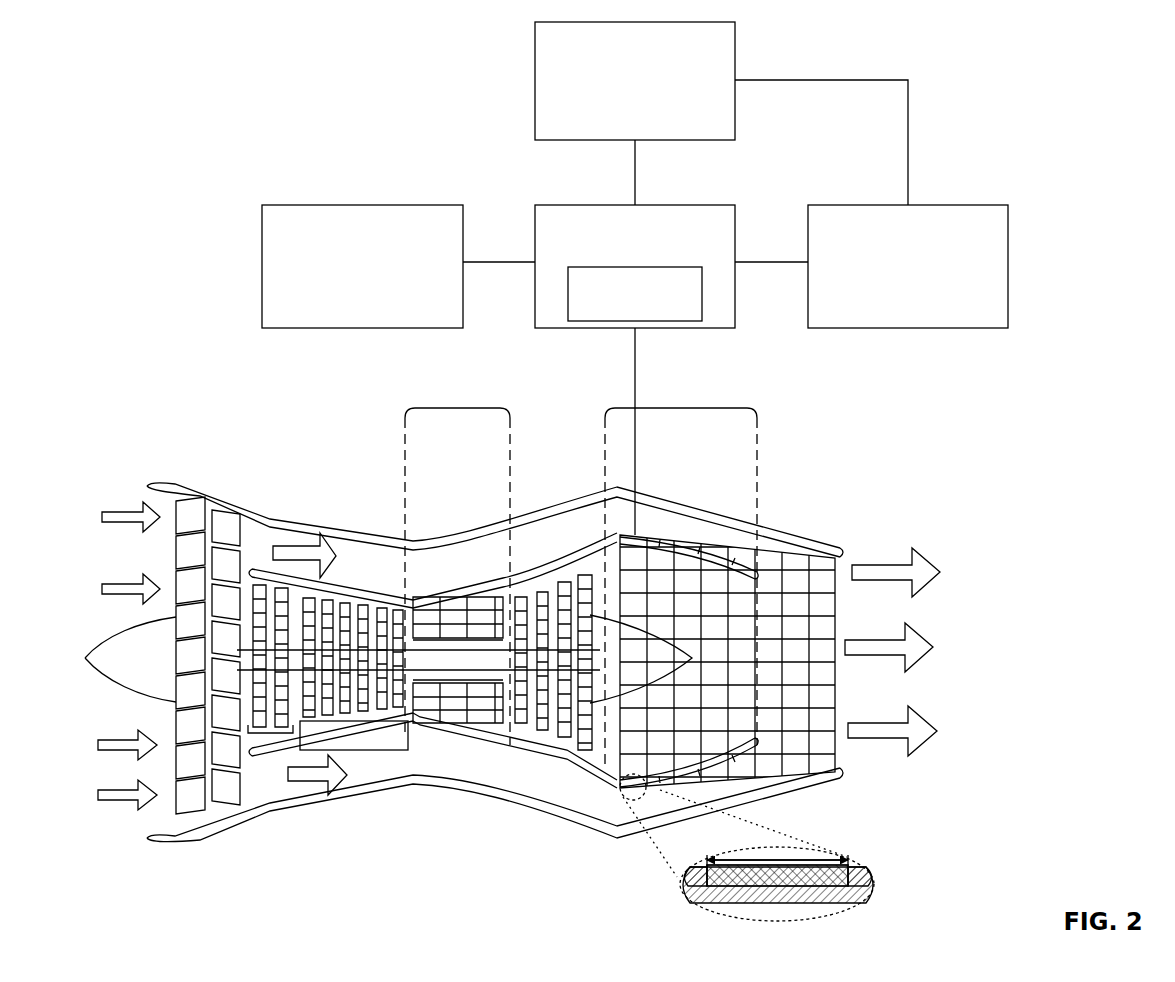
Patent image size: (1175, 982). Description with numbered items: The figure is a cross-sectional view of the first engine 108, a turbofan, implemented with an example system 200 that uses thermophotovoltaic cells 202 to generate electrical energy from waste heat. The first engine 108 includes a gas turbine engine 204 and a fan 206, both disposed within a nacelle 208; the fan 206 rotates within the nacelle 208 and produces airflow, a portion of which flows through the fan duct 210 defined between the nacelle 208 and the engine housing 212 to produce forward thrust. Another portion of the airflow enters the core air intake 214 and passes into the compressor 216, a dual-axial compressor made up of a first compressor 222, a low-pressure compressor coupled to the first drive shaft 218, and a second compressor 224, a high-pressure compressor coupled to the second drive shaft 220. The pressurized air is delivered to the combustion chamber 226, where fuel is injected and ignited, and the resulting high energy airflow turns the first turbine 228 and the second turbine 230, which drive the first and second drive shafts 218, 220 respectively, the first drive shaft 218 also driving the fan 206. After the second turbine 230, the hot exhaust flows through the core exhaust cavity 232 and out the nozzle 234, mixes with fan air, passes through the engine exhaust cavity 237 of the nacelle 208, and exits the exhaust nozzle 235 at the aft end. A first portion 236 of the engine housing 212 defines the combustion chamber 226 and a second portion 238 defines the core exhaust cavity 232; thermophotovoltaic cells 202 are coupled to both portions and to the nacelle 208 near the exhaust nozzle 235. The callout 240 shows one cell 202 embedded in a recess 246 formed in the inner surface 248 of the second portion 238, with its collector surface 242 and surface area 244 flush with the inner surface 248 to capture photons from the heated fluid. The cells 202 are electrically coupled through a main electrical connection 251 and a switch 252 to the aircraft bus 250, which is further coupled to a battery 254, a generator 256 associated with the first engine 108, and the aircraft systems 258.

The first engine 108 is at (115, 372).
The system 200 is at (797, 437).
The thermophotovoltaic cells 202 is at (688, 565).
The gas turbine engine 204 is at (345, 580).
The fan 206 is at (205, 493).
The nacelle 208 is at (598, 510).
The fan duct 210 is at (341, 672).
The engine housing 212 is at (548, 573).
The core air intake 214 is at (250, 553).
The compressor 216 is at (385, 765).
The first drive shaft 218 is at (425, 660).
The second drive shaft 220 is at (413, 605).
The first compressor 222 is at (273, 737).
The second compressor 224 is at (350, 752).
The combustion chamber 226 is at (495, 718).
The first turbine 228 is at (580, 760).
The second turbine 230 is at (525, 740).
The core exhaust cavity 232 is at (708, 735).
The nozzle 234 is at (760, 572).
The exhaust nozzle 235 is at (840, 550).
The first portion 236 is at (458, 408).
The engine exhaust cavity 237 is at (822, 632).
The second portion 238 is at (680, 408).
The callout 240 is at (866, 905).
The collector surface 242 is at (758, 862).
The surface area 244 is at (790, 860).
The recess 246 is at (697, 873).
The inner surface 248 is at (845, 858).
The aircraft bus 250 is at (685, 204).
The main electrical connection 251 is at (632, 372).
The switch 252 is at (635, 294).
The battery 254 is at (635, 81).
The generator 256 is at (362, 266).
The aircraft systems 258 is at (908, 266).